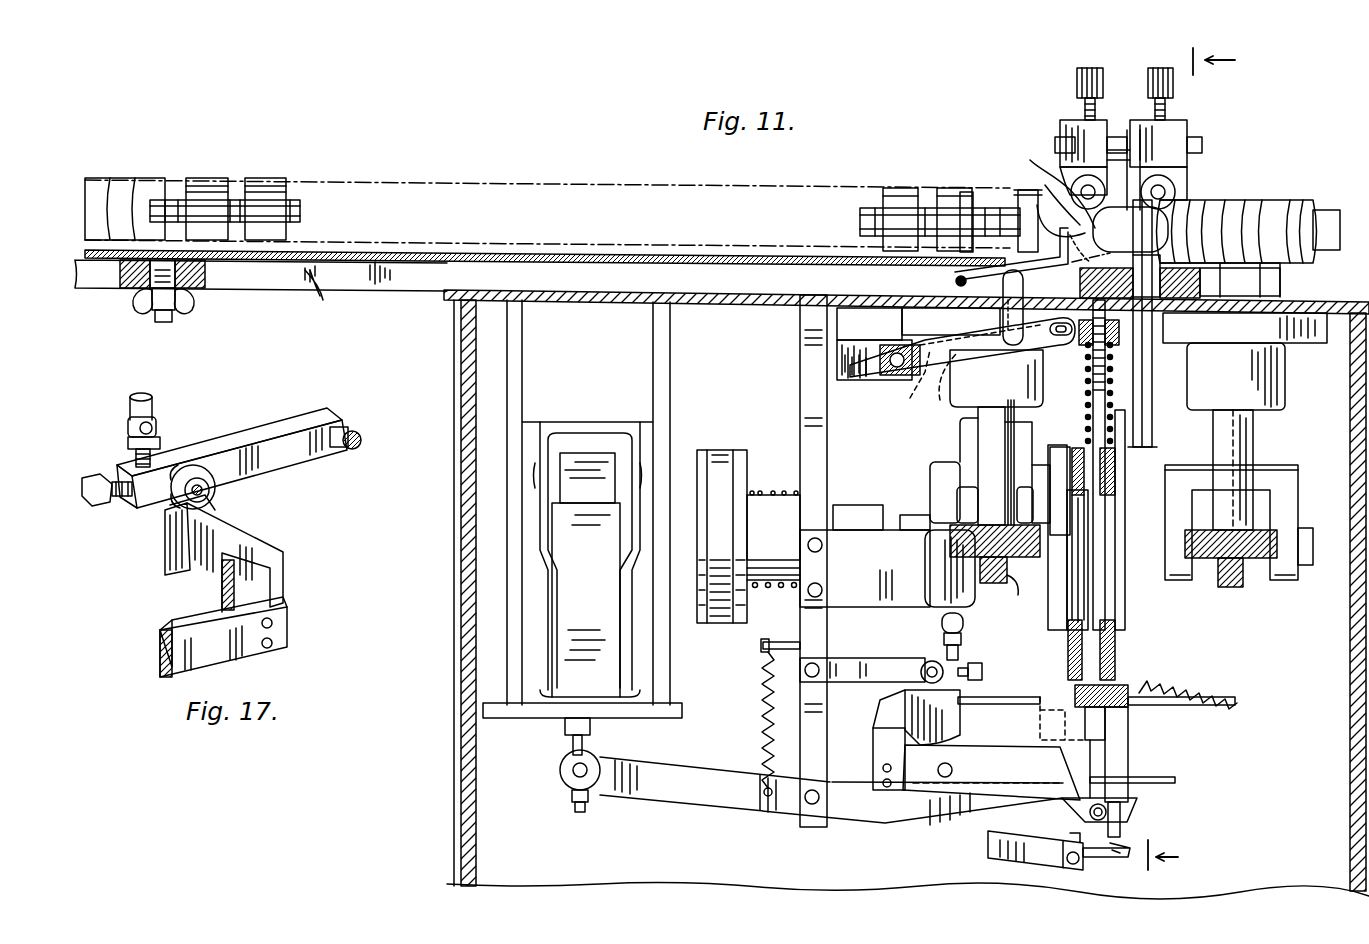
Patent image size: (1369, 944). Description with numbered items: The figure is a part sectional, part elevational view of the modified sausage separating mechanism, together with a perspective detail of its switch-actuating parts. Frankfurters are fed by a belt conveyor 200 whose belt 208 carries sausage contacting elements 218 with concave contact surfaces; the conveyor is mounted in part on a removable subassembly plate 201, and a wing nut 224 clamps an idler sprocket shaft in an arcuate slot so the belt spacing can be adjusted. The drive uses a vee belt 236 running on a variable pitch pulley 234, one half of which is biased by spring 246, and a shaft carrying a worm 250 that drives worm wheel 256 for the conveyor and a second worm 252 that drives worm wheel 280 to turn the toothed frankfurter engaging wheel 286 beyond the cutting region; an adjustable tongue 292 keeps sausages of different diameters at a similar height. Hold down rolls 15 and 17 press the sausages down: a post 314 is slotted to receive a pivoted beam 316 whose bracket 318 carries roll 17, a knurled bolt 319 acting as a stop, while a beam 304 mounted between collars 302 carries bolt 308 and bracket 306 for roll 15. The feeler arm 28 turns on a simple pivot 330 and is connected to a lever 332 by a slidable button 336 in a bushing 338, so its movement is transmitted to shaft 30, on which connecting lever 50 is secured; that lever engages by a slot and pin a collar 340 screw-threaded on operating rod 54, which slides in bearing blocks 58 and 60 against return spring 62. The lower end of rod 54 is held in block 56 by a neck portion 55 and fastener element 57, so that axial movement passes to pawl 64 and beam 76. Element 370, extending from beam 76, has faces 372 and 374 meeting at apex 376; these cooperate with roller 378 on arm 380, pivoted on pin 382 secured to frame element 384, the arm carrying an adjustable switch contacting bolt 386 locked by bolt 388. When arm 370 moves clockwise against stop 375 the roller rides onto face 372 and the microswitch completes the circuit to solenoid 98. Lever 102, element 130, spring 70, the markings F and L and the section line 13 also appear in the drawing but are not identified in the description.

In FIG. 11, the belt conveyor 200 is at (290, 163).
In FIG. 11, the sausage contacting elements 218 is at (210, 187).
In FIG. 11, the belt 208 is at (272, 198).
In FIG. 11, the subassembly plate 201 is at (320, 268).
In FIG. 11, the wing nut 224 is at (190, 302).
In FIG. 11, the solenoid 98 is at (560, 587).
In FIG. 11, the lever 102 is at (695, 788).
In FIG. 11, the frame element 384 is at (803, 410).
In FIG. 11, the pin 382 is at (800, 650).
In FIG. 17, the pin 382 is at (357, 438).
In FIG. 11, the arm 380 is at (840, 657).
In FIG. 17, the arm 380 is at (300, 410).
In FIG. 11, the pulley 234 is at (703, 450).
In FIG. 11, the vee belt 236 is at (718, 625).
In FIG. 11, the spring 246 is at (775, 491).
In FIG. 11, the block / bolt 130 is at (935, 569).
In FIG. 17, the block / bolt 130 is at (150, 420).
In FIG. 11, the worm wheel 256 is at (995, 530).
In FIG. 11, the worm 250 is at (1025, 598).
In FIG. 11, the lever 332 is at (962, 389).
In FIG. 11, the pivot 330 is at (935, 313).
In FIG. 11, the slidable button 336 is at (1000, 318).
In FIG. 11, the bushing 338 is at (1010, 348).
In FIG. 11, the connecting lever 50 is at (1055, 345).
In FIG. 11, the shaft 30 is at (897, 365).
In FIG. 11, the adjustable tongue 292 is at (982, 278).
In FIG. 11, the hold down roll 15 is at (1052, 180).
In FIG. 11, the film F is at (1040, 217).
In FIG. 11, the leader L is at (1080, 212).
In FIG. 11, the feeler arm 28 is at (1130, 229).
In FIG. 11, the frankfurter engaging wheel 286 is at (1245, 205).
In FIG. 11, the bolt 308 is at (1092, 67).
In FIG. 11, the bolt 319 is at (1165, 67).
In FIG. 11, the collars 302 is at (1065, 130).
In FIG. 11, the beam 304 is at (1080, 125).
In FIG. 11, the post 314 is at (1175, 140).
In FIG. 11, the beam 316 is at (1148, 135).
In FIG. 11, the bracket 306 is at (1072, 182).
In FIG. 11, the bracket 318 is at (1168, 178).
In FIG. 11, the hold down roll 17 is at (1170, 190).
In FIG. 11, the collar 340 is at (1118, 335).
In FIG. 11, the return spring 62 is at (1108, 372).
In FIG. 11, the worm 252 is at (1230, 587).
In FIG. 11, the worm wheel 280 is at (1260, 542).
In FIG. 11, the bearing block 58 is at (1115, 472).
In FIG. 11, the operating rod 54 is at (1105, 580).
In FIG. 11, the bearing block 60 is at (1120, 650).
In FIG. 11, the block 56 is at (1120, 674).
In FIG. 11, the fastener element 57 is at (1128, 692).
In FIG. 11, the pawl 64 is at (1120, 737).
In FIG. 11, the spring 70 is at (1170, 782).
In FIG. 11, the neck portion 55 is at (1047, 718).
In FIG. 11, the arm 370 is at (885, 730).
In FIG. 17, the arm 370 is at (165, 560).
In FIG. 11, the apex 376 is at (915, 697).
In FIG. 17, the apex 376 is at (215, 510).
In FIG. 11, the face 374 is at (1000, 702).
In FIG. 17, the face 374 is at (170, 530).
In FIG. 11, the beam 76 is at (903, 792).
In FIG. 17, the beam 76 is at (165, 655).
In FIG. 11, the face 372 is at (925, 689).
In FIG. 17, the face 372 is at (255, 532).
In FIG. 11, the roller 378 is at (925, 662).
In FIG. 17, the roller 378 is at (190, 470).
In FIG. 11, the switch contacting bolt 386 is at (960, 650).
In FIG. 17, the switch contacting bolt 386 is at (128, 440).
In FIG. 11, the locking bolt 388 is at (982, 674).
In FIG. 17, the locking bolt 388 is at (100, 475).
In FIG. 11, the stop 375 is at (999, 686).
In FIG. 11, the section line 13 is at (1210, 461).